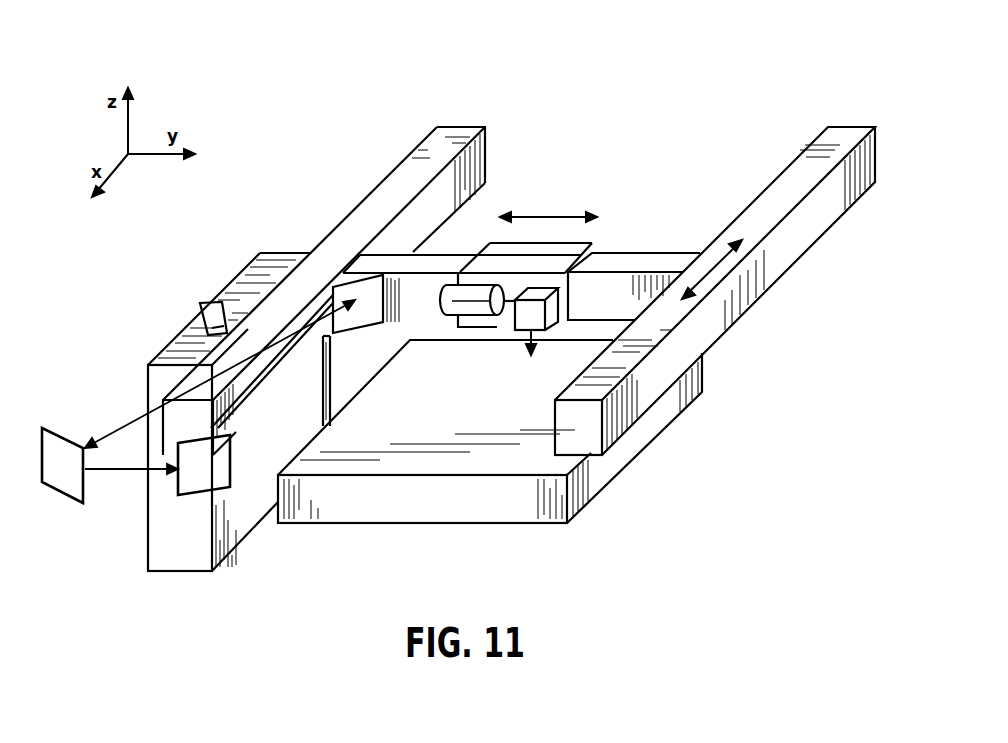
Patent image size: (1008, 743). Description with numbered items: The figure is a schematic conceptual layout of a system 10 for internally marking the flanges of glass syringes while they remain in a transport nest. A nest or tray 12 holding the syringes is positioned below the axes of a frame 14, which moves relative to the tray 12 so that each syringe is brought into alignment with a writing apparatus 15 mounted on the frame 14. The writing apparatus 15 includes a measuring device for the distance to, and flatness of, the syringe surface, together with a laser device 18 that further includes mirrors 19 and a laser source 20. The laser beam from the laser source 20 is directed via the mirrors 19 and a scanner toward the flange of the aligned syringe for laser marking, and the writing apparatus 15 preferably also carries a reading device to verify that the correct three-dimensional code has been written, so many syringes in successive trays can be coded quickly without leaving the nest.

The system 10 is at (719, 96).
The tray 12 is at (432, 518).
The frame 14 is at (749, 211).
The writing apparatus 15 is at (523, 328).
The laser device 18 is at (468, 290).
The mirrors 19 is at (67, 438).
The laser source 20 is at (240, 277).